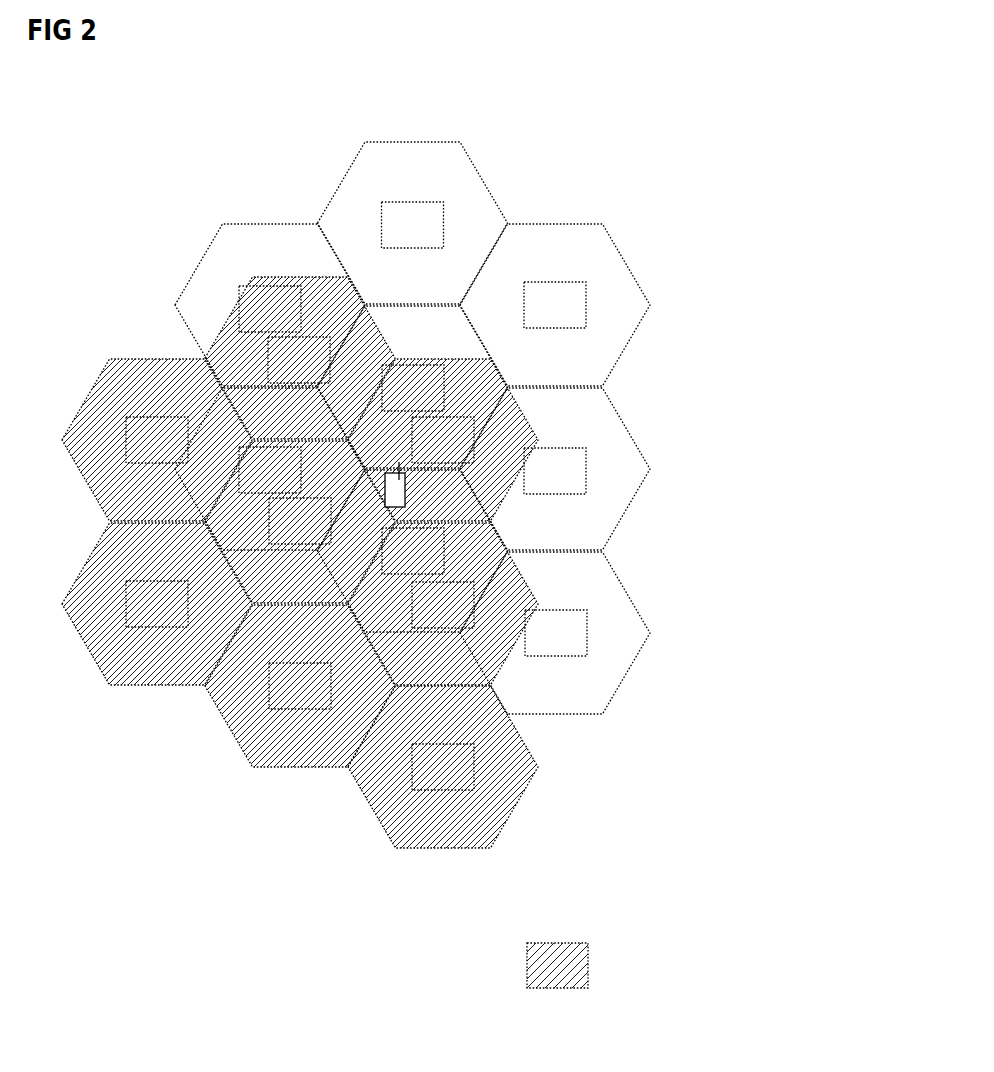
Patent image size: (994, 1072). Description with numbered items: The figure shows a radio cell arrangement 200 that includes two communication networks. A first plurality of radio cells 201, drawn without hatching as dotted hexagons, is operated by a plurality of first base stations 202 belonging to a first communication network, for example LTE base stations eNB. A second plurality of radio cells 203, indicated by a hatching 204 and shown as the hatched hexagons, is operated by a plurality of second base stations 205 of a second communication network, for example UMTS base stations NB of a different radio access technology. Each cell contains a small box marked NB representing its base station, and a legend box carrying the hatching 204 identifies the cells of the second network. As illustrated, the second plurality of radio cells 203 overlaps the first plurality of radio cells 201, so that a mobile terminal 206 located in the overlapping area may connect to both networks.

The radio cell arrangement 200 is at (632, 74).
The first plurality of radio cells 201 is at (620, 253).
The first base stations 202 is at (558, 448).
The second plurality of radio cells 203 is at (517, 572).
The hatching 204 is at (560, 943).
The second base stations 205 is at (462, 622).
The mobile terminal 206 is at (393, 507).